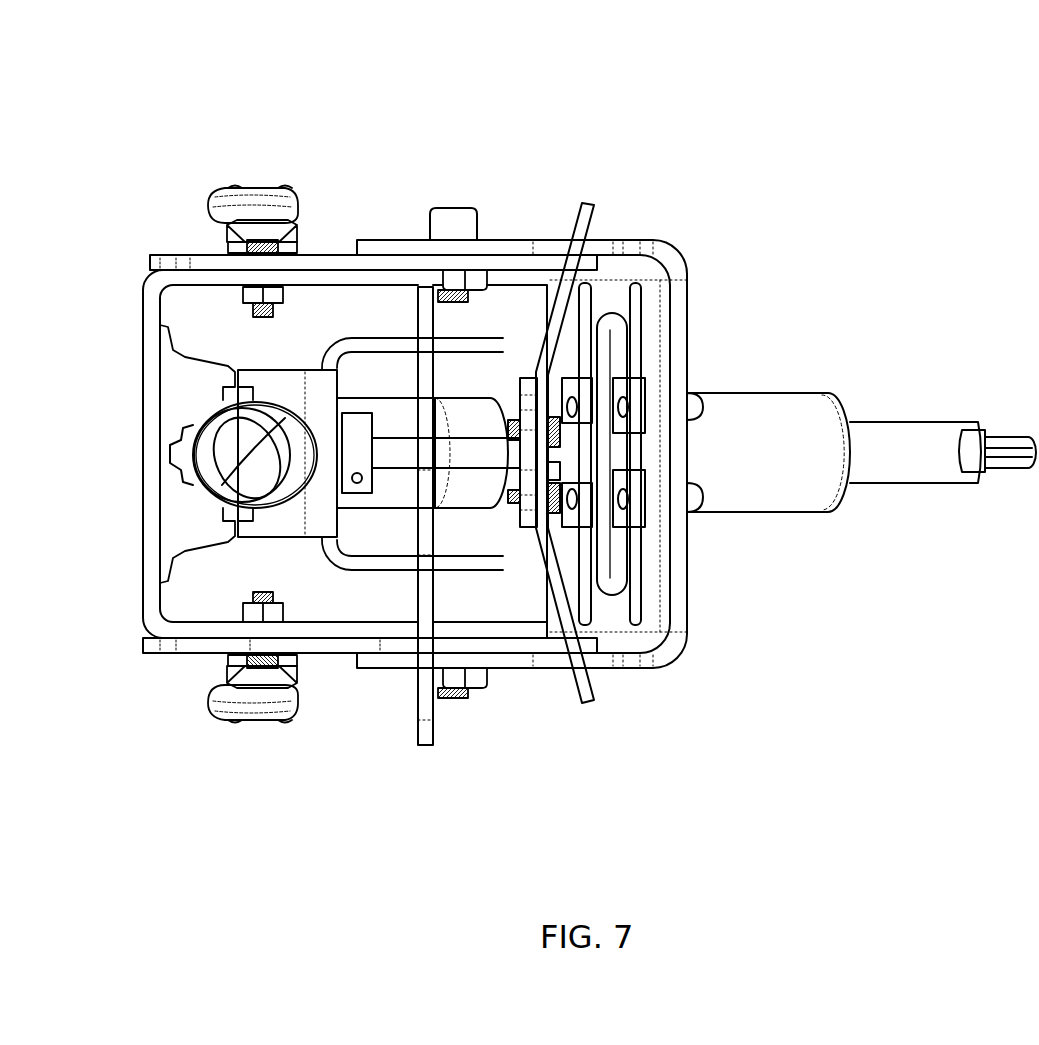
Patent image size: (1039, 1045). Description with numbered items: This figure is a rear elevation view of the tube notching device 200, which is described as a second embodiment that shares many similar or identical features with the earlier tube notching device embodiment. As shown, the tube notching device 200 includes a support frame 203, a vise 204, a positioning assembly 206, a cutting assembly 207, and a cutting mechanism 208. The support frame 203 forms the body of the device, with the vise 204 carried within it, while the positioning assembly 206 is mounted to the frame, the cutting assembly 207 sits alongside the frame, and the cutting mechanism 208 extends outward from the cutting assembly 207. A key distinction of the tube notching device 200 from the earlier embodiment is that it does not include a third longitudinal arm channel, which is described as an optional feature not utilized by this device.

The tube notching device 200 is at (228, 88).
The support frame 203 is at (98, 328).
The vise 204 is at (296, 364).
The positioning assembly 206 is at (317, 222).
The cutting assembly 207 is at (667, 212).
The cutting mechanism 208 is at (839, 354).